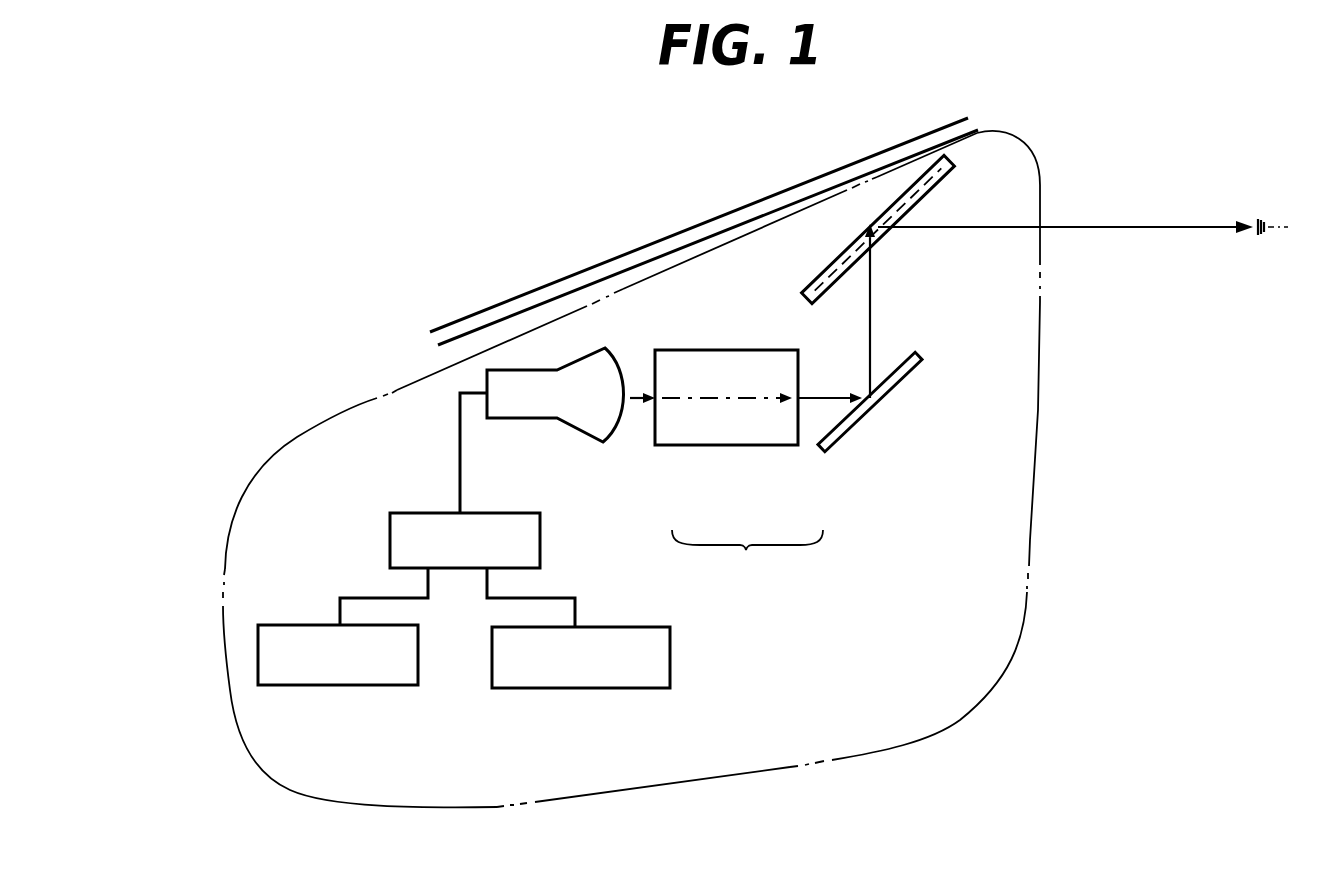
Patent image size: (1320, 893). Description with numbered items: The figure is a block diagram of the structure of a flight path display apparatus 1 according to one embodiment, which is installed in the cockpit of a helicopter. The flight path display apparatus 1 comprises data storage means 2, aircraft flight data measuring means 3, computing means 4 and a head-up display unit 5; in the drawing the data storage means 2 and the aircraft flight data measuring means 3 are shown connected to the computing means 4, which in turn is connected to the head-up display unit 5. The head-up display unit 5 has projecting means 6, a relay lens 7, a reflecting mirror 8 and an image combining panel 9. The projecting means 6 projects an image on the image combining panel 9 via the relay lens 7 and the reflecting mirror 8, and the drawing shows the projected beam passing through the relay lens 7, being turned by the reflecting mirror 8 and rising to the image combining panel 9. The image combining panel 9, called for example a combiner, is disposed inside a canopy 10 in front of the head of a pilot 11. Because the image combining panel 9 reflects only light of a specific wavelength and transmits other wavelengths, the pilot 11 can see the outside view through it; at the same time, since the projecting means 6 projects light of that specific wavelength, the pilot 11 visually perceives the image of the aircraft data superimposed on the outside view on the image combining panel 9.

The flight path display apparatus 1 is at (322, 422).
The data storage means 2 is at (335, 685).
The aircraft flight data measuring means 3 is at (568, 688).
The computing means 4 is at (540, 540).
The head-up display unit 5 is at (747, 561).
The projecting means 6 is at (607, 420).
The relay lens 7 is at (723, 445).
The reflecting mirror 8 is at (857, 427).
The image combining panel 9 is at (887, 232).
The canopy 10 is at (753, 206).
The pilot 11 is at (1277, 223).